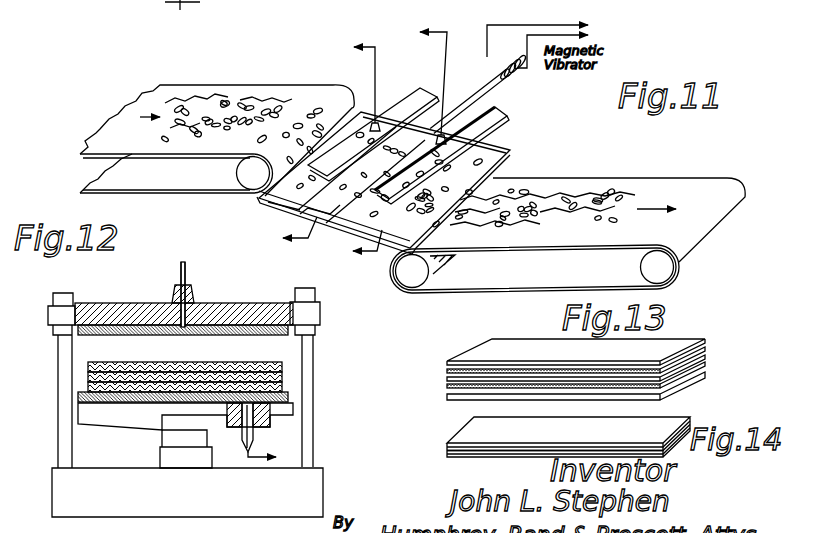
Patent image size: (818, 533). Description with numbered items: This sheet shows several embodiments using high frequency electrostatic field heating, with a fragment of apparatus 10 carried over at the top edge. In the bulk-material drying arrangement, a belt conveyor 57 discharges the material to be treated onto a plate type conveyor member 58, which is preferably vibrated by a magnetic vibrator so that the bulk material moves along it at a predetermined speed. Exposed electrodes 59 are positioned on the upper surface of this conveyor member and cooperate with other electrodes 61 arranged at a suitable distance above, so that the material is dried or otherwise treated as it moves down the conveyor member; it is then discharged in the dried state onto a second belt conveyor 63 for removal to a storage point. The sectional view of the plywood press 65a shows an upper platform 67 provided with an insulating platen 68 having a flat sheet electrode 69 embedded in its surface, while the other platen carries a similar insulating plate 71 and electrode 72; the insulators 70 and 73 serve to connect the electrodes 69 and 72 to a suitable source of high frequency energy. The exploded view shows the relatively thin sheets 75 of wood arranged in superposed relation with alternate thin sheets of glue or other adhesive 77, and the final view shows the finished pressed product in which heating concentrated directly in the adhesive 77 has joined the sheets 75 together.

In FIG. 11, the apparatus (partial, from adjacent sheet) 10 is at (189, 6).
In FIG. 11, the belt conveyor 57 is at (206, 90).
In FIG. 11, the plate type conveyor member 58 is at (276, 208).
In FIG. 11, the exposed electrodes 59 is at (350, 203).
In FIG. 11, the electrodes 61 is at (404, 96).
In FIG. 11, the second belt conveyor 63 is at (658, 182).
In FIG. 12, the hydraulic press 65a is at (40, 425).
In FIG. 12, the upper platform 67 is at (313, 311).
In FIG. 12, the insulating platen 68 is at (300, 335).
In FIG. 12, the flat sheet electrode 69 is at (225, 335).
In FIG. 12, the insulator 70 is at (195, 294).
In FIG. 12, the insulating plate 71 is at (292, 394).
In FIG. 12, the electrode 72 is at (107, 404).
In FIG. 12, the insulator 73 is at (256, 424).
In FIG. 13, the thin sheets 75 is at (705, 374).
In FIG. 14, the thin sheets 75 is at (459, 441).
In FIG. 13, the sheets of glue or other adhesive 77 is at (447, 386).
In FIG. 14, the sheets of glue or other adhesive 77 is at (447, 451).